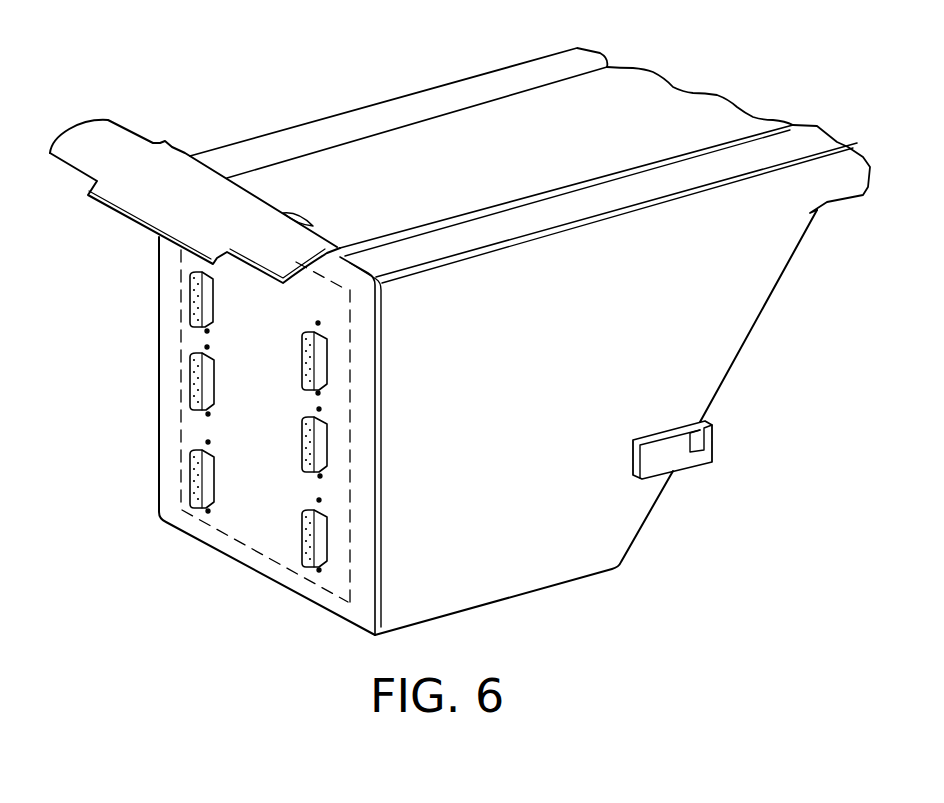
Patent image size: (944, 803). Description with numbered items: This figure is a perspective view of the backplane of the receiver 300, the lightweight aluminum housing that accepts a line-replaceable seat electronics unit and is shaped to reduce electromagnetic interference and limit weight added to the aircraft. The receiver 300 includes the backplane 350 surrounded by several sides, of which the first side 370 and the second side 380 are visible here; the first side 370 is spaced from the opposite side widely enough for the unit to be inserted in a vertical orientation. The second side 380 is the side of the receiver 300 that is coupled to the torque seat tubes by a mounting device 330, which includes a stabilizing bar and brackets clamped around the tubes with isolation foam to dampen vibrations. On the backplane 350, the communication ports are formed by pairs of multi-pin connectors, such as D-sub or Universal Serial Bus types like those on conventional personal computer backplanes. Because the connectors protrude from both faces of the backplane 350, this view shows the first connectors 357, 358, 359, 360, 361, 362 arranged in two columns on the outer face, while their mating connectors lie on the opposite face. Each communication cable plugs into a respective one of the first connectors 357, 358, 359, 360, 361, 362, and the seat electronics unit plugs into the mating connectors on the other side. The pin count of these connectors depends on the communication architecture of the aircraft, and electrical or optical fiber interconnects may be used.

The receiver 300 is at (567, 542).
The mounting device 330 is at (518, 123).
The backplane 350 is at (163, 253).
The first connector 357 is at (323, 360).
The first connector 358 is at (327, 445).
The first connector 359 is at (327, 540).
The first connector 360 is at (192, 293).
The first connector 361 is at (192, 377).
The first connector 362 is at (190, 473).
The first side 370 is at (748, 290).
The second side 380 is at (397, 110).